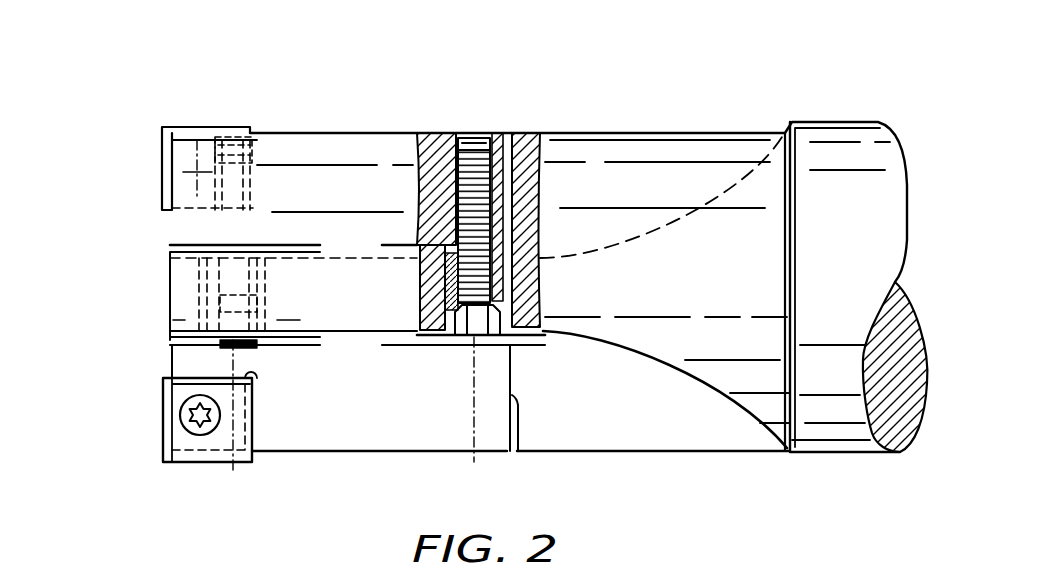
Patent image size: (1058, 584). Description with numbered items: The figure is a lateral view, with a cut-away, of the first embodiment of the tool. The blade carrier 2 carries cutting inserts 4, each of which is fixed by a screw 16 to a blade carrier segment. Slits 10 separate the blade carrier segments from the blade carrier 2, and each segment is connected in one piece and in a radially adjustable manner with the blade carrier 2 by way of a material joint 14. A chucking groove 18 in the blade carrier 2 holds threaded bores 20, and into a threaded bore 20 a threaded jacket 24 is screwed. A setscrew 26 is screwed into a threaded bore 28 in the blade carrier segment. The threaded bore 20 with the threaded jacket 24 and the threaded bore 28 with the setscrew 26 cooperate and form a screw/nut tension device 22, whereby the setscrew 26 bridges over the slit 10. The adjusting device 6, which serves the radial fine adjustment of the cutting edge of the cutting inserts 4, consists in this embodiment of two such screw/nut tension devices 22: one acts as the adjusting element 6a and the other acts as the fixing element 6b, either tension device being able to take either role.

The blade carrier 2 is at (670, 148).
The cutting insert 4 is at (163, 188).
The adjusting device 6 is at (453, 72).
The adjusting element 6a is at (502, 72).
The fixing element 6b is at (245, 150).
The slit 10 is at (527, 130).
The material joint 14 is at (343, 243).
The screw 16 is at (193, 170).
The chucking groove 18 is at (620, 400).
The threaded bore 20 is at (505, 313).
The screw/nut tension device 22 is at (572, 110).
The threaded jacket 24 is at (505, 286).
The setscrew 26 is at (442, 130).
The threaded bore 28 is at (477, 130).